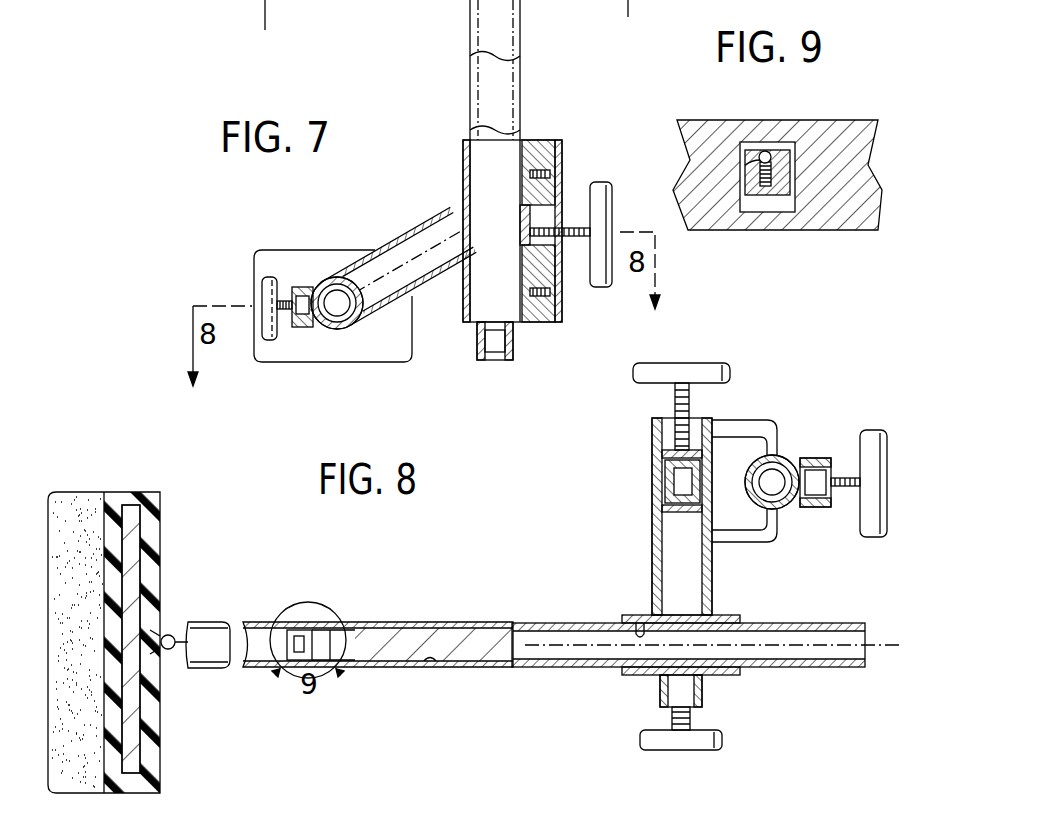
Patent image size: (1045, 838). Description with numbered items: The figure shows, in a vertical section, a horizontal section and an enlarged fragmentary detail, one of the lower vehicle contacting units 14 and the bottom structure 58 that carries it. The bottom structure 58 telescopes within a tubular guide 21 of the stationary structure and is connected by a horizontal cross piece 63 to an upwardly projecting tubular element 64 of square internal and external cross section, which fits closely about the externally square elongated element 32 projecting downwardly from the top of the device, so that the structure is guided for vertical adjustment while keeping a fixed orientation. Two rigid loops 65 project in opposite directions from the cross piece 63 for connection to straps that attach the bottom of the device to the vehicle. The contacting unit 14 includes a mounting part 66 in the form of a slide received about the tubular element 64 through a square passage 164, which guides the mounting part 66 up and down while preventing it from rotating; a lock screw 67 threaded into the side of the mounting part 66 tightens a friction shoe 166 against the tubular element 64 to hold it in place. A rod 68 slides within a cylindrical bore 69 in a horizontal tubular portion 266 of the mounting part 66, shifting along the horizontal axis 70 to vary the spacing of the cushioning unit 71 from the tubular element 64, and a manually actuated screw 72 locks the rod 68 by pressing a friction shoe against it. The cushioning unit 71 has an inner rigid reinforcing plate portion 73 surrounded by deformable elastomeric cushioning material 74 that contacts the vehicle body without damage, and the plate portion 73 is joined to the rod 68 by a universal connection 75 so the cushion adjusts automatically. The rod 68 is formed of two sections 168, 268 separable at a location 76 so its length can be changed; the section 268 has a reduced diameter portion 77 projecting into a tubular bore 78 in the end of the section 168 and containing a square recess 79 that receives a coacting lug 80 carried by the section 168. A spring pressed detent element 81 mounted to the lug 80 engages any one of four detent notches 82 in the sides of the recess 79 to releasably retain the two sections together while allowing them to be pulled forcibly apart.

In FIG. 7, the lower vehicle contacting unit 14 is at (310, 280).
In FIG. 8, the lower vehicle contacting unit 14 is at (488, 592).
In FIG. 7, the tubular guide 21 is at (490, 27).
In FIG. 7, the elongated element 32 is at (495, 172).
In FIG. 8, the bottom structure 58 is at (817, 448).
In FIG. 8, the horizontal cross piece 63 is at (742, 470).
In FIG. 7, the tubular element 64 is at (490, 98).
In FIG. 8, the tubular element 64 is at (652, 482).
In FIG. 8, the rigid loop 65 is at (755, 440).
In FIG. 7, the mounting part 66 is at (571, 154).
In FIG. 8, the mounting part 66 is at (652, 538).
In FIG. 7, the lock screw 67 is at (600, 183).
In FIG. 8, the lock screw 67 is at (700, 365).
In FIG. 7, the rod 68 is at (327, 334).
In FIG. 8, the rod 68 is at (778, 619).
In FIG. 7, the cylindrical bore 69 is at (345, 322).
In FIG. 8, the cylindrical bore 69 is at (637, 617).
In FIG. 8, the horizontal axis 70 is at (825, 640).
In FIG. 7, the cushioning unit 71 is at (278, 363).
In FIG. 8, the cushioning unit 71 is at (160, 503).
In FIG. 8, the manually actuated screw 72 is at (690, 751).
In FIG. 8, the reinforcing plate portion 73 is at (137, 560).
In FIG. 8, the elastomeric cushioning material 74 is at (152, 772).
In FIG. 8, the universal connection 75 is at (170, 624).
In FIG. 8, the separation location 76 is at (460, 668).
In FIG. 9, the reduced diameter portion 77 is at (828, 180).
In FIG. 8, the reduced diameter portion 77 is at (383, 668).
In FIG. 8, the tubular bore 78 is at (432, 665).
In FIG. 9, the recess 79 is at (785, 197).
In FIG. 9, the lug 80 is at (752, 210).
In FIG. 9, the spring pressed detent element 81 is at (790, 150).
In FIG. 9, the detent notch 82 is at (748, 164).
In FIG. 7, the passage 164 is at (522, 145).
In FIG. 7, the friction shoe 166 is at (560, 255).
In FIG. 9, the rod section 168 is at (825, 120).
In FIG. 8, the rod section 168 is at (398, 622).
In FIG. 8, the horizontal tubular portion 266 is at (640, 674).
In FIG. 8, the rod section 268 is at (563, 618).